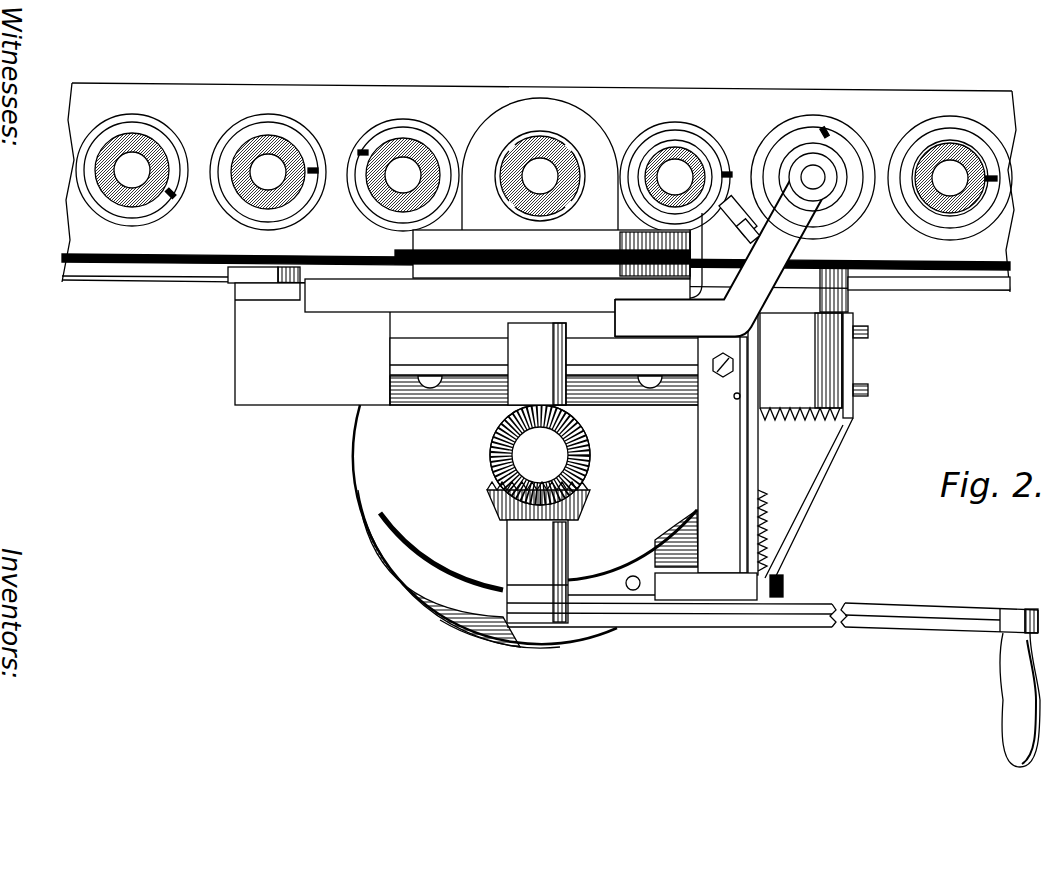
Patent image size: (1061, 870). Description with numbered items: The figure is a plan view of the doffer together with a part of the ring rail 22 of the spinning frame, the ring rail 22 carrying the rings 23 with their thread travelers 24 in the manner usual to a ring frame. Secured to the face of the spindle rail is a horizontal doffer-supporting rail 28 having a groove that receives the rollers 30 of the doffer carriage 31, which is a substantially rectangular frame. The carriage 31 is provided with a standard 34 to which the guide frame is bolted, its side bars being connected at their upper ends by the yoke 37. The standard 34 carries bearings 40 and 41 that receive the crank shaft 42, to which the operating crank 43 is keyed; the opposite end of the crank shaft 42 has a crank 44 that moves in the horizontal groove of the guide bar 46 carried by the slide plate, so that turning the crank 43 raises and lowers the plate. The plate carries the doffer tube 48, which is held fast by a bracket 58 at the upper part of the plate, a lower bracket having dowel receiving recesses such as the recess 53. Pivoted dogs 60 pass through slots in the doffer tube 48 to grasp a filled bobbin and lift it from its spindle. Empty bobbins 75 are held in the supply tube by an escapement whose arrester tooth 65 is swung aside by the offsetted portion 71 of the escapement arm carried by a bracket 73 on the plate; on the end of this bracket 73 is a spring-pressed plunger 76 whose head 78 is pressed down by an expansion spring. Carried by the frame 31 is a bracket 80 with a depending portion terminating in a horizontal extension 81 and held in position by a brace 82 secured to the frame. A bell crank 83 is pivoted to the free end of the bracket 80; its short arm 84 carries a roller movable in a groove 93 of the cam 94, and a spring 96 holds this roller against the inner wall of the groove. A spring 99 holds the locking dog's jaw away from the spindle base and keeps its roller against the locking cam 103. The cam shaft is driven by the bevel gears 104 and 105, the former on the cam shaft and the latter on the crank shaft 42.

The ring rail 22 is at (72, 236).
The rings 23 is at (160, 120).
The thread travelers 24 is at (170, 196).
The doffer-supporting rail 28 is at (62, 280).
The rollers 30 is at (228, 270).
The doffer carriage 31 is at (290, 405).
The standard 34 is at (545, 371).
The yoke 37 is at (542, 253).
The bearing 40 is at (538, 364).
The bearing 41 is at (537, 571).
The crank shaft 42 is at (592, 455).
The operating crank 43 is at (807, 628).
The crank 44 is at (537, 364).
The guide bar 46 is at (497, 295).
The doffer tube 48 is at (552, 128).
The dowel receiving recess 53 is at (692, 142).
The bracket 58 is at (516, 98).
The dogs 60 is at (570, 142).
The arrester tooth 65 is at (742, 218).
The offsetted portion 71 is at (764, 222).
The bracket 73 is at (654, 318).
The bobbins 75 is at (540, 173).
The spring-pressed plunger 76 is at (818, 172).
The head 78 is at (840, 165).
The bracket 80 is at (728, 444).
The horizontal extension 81 is at (645, 600).
The brace 82 is at (800, 520).
The bell crank 83 is at (670, 525).
The short arm 84 is at (594, 590).
The groove 93 is at (476, 620).
The cam 94 is at (541, 646).
The spring 96 is at (806, 420).
The spring 99 is at (772, 535).
The locking cam 103 is at (485, 526).
The bevel gear 104 is at (490, 455).
The bevel gear 105 is at (590, 515).